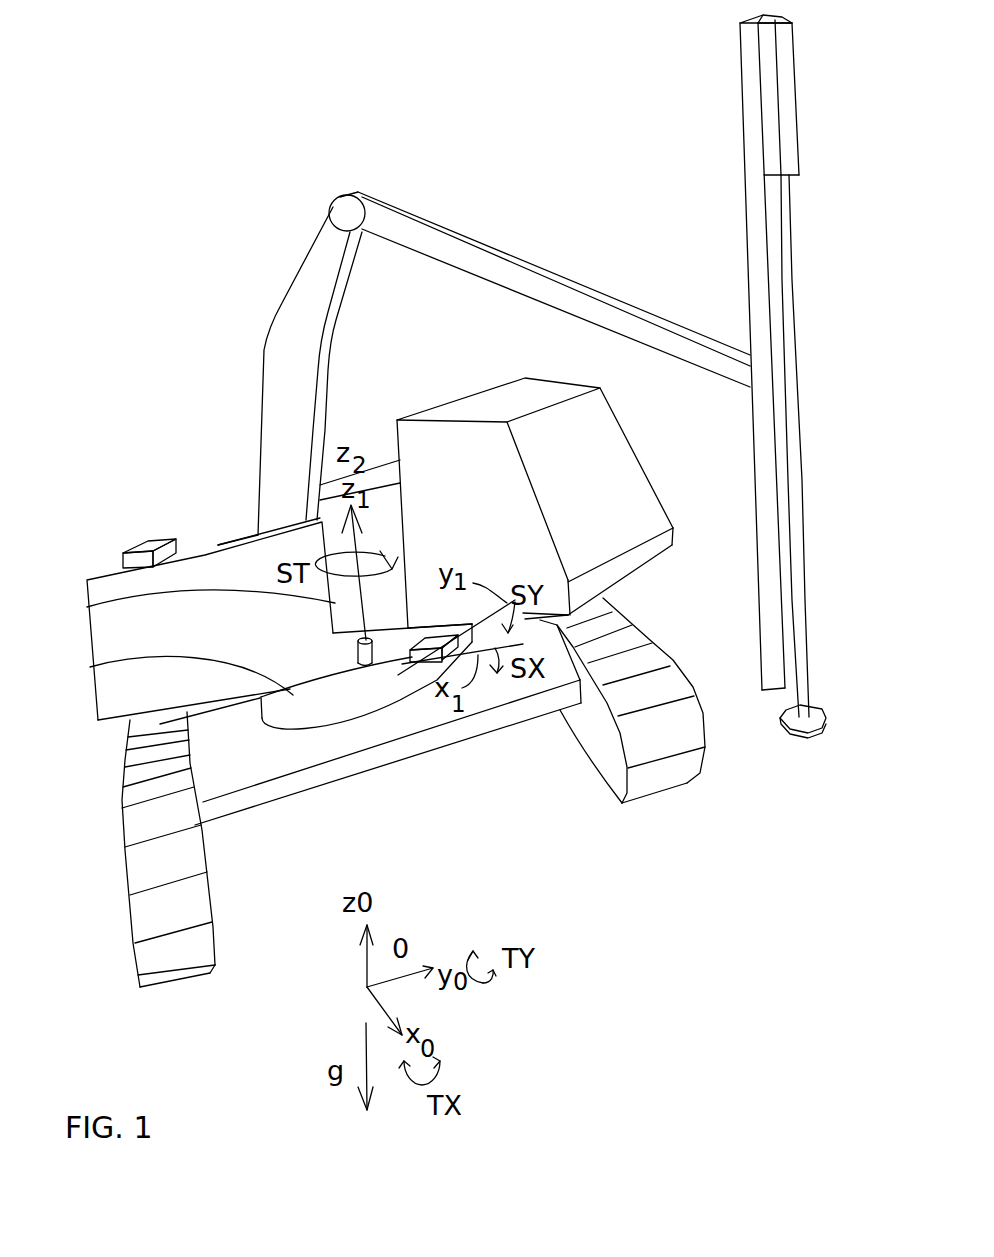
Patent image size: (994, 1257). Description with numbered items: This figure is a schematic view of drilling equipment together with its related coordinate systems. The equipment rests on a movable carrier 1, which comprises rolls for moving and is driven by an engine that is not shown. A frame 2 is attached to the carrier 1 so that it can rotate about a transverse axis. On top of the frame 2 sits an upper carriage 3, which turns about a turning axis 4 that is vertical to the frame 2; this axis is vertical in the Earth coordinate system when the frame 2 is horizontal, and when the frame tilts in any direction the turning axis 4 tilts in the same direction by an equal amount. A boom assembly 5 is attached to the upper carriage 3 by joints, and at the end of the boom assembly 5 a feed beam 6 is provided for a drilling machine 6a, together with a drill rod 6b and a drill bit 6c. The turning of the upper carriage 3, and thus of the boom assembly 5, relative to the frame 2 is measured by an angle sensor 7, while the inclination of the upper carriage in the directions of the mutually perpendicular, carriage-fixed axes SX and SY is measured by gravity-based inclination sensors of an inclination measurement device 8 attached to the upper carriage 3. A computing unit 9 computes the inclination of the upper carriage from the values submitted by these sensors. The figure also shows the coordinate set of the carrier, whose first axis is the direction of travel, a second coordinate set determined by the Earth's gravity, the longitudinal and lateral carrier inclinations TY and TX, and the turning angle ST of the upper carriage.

The movable carrier 1 is at (167, 953).
The frame 2 is at (252, 738).
The upper carriage 3 is at (90, 667).
The turning axis 4 is at (87, 607).
The boom assembly 5 is at (285, 428).
The feed beam 6 is at (759, 400).
The drilling machine 6a is at (790, 110).
The drill rod 6b is at (797, 312).
The drill bit 6c is at (788, 733).
The angle sensor 7 is at (357, 660).
The inclination measurement device 8 is at (425, 657).
The computing unit 9 is at (150, 545).